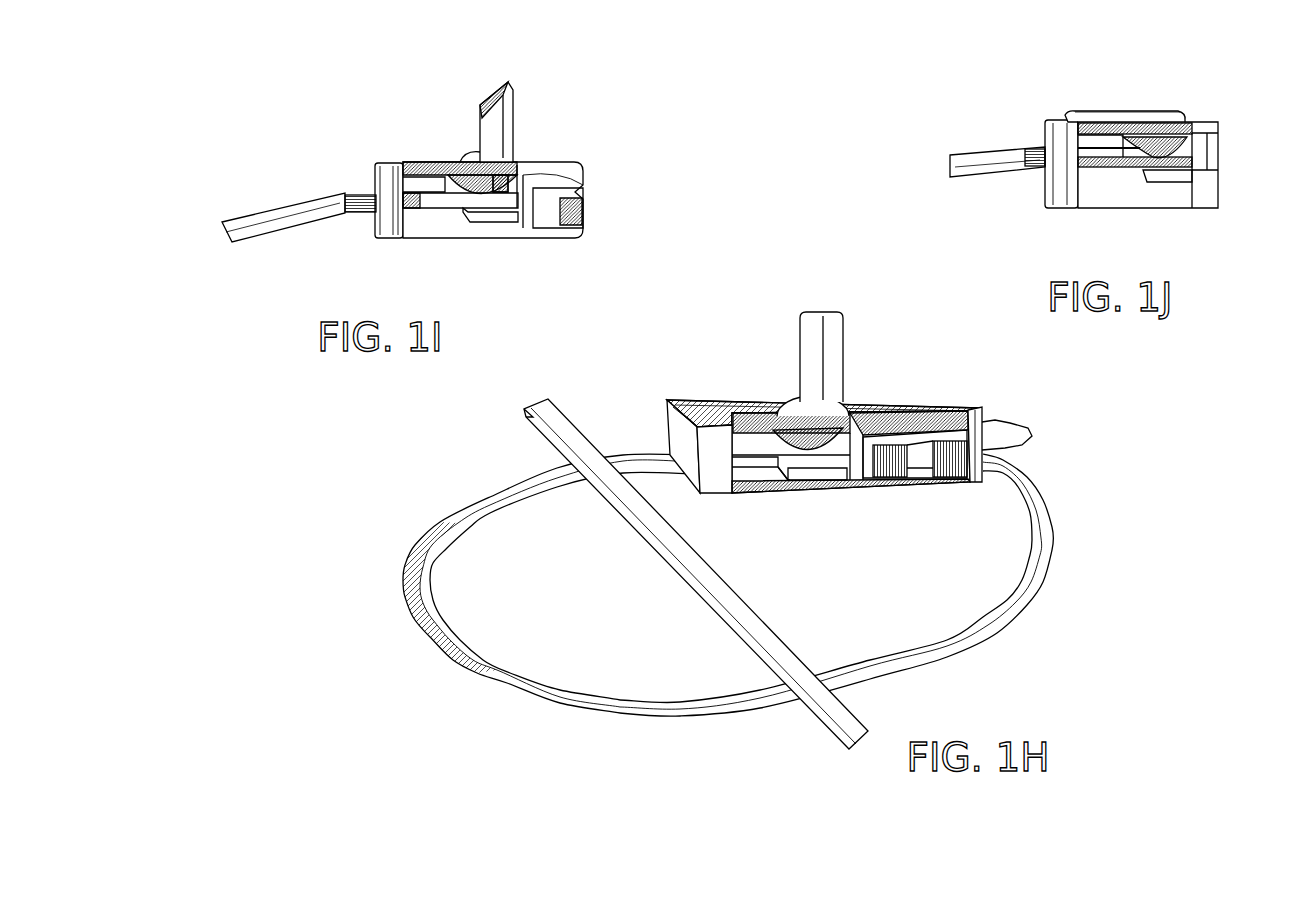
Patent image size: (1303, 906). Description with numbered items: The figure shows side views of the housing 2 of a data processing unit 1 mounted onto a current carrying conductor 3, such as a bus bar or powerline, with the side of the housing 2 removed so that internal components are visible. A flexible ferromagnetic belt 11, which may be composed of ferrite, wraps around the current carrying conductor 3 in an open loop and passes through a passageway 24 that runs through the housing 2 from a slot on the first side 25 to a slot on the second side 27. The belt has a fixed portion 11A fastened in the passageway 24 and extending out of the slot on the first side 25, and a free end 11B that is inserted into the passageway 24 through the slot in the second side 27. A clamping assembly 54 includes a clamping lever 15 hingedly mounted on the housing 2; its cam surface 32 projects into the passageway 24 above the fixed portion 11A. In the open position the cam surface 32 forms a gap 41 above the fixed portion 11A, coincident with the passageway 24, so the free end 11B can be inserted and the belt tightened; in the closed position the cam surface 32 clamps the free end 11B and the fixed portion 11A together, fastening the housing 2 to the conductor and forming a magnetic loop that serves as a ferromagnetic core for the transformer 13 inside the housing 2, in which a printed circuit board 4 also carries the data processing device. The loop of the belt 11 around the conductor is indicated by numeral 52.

In FIG. 1H, the data processing unit 1 is at (792, 528).
In FIG. 1I, the housing 2 is at (450, 167).
In FIG. 1J, the housing 2 is at (1119, 150).
In FIG. 1H, the housing 2 is at (877, 446).
In FIG. 1H, the current carrying conductor 3 is at (802, 741).
In FIG. 1H, the printed circuit board 4 is at (937, 420).
In FIG. 1I, the flexible ferromagnetic belt 11 is at (318, 216).
In FIG. 1J, the flexible ferromagnetic belt 11 is at (1000, 167).
In FIG. 1H, the flexible ferromagnetic belt 11 is at (787, 613).
In FIG. 1I, the fixed portion 11A is at (490, 222).
In FIG. 1J, the fixed portion 11A is at (1163, 180).
In FIG. 1H, the fixed portion 11A is at (825, 496).
In FIG. 1I, the free end 11B is at (447, 209).
In FIG. 1J, the free end 11B is at (1123, 167).
In FIG. 1H, the free end 11B is at (773, 498).
In FIG. 1I, the transformer 13 is at (580, 212).
In FIG. 1H, the transformer 13 is at (898, 481).
In FIG. 1I, the clamping lever 15 is at (513, 90).
In FIG. 1J, the clamping lever 15 is at (1158, 112).
In FIG. 1H, the clamping lever 15 is at (800, 322).
In FIG. 1I, the passageway 24 is at (360, 182).
In FIG. 1J, the passageway 24 is at (1032, 144).
In FIG. 1H, the passageway 24 is at (774, 504).
In FIG. 1H, the first side 25 is at (1020, 418).
In FIG. 1H, the second side 27 is at (667, 420).
In FIG. 1J, the cam surface 32 is at (1196, 147).
In FIG. 1I, the gap 41 is at (450, 181).
In FIG. 1H, the gap 41 is at (766, 436).
In FIG. 1H, the lace loop 52 is at (1057, 468).
In FIG. 1I, the clamping assembly 54 is at (433, 167).